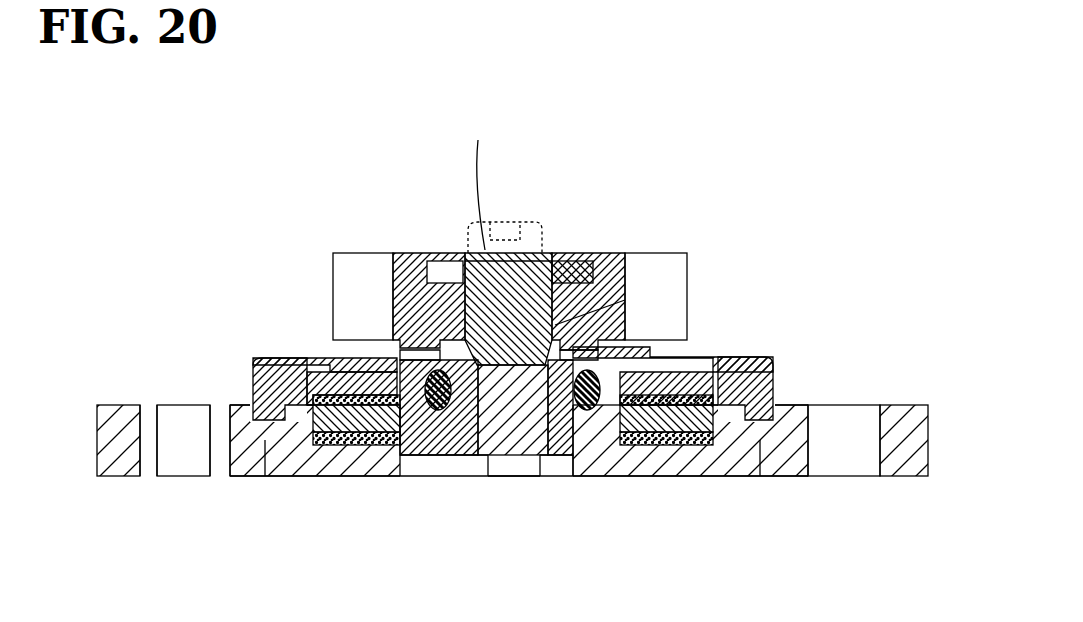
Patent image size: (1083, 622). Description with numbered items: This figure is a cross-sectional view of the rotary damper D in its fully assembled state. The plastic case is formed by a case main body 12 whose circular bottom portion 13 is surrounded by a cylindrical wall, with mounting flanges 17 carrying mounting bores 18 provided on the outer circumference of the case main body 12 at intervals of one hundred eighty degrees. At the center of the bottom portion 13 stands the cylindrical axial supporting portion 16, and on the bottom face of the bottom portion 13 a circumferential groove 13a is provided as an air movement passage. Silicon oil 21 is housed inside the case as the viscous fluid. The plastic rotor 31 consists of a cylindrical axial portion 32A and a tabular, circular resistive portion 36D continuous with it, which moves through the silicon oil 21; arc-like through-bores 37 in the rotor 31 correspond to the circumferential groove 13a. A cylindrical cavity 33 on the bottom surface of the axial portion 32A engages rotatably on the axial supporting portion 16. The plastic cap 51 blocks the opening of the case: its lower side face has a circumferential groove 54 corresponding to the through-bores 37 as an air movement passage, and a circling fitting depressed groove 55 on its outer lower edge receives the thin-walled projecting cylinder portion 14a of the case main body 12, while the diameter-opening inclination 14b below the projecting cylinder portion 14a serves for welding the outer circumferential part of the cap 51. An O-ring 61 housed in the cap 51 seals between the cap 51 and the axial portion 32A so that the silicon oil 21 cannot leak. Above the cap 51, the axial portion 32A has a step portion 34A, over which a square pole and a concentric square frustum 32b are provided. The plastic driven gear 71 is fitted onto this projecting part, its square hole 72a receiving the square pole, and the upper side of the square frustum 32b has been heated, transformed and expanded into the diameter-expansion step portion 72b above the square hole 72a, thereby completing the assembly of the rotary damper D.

The case main body 12 is at (570, 495).
The bottom portion 13 is at (640, 476).
The circumferential groove 13a is at (685, 470).
The thin-walled projecting cylinder portion 14a is at (775, 365).
The diameter-opening inclination 14b is at (802, 472).
The axial supporting portion 16 is at (505, 470).
The mounting flange 17 is at (920, 468).
The mounting bore 18 is at (862, 468).
The silicon oil 21 is at (738, 476).
The rotor 31 is at (498, 143).
The axial portion 32A is at (580, 470).
The square frustum 32b is at (555, 250).
The cylindrical cavity 33 is at (492, 470).
The step portion 34A is at (440, 258).
The resistive portion 36D is at (436, 476).
The arc-like through-bore 37 is at (358, 470).
The cap 51 is at (750, 350).
The circumferential groove 54 is at (650, 390).
The fitting depressed groove 55 is at (795, 395).
The O-ring 61 is at (392, 350).
The driven gear 71 is at (690, 252).
The square hole 72a is at (640, 292).
The diameter-expansion step portion 72b is at (582, 252).
The rotary damper D is at (310, 265).